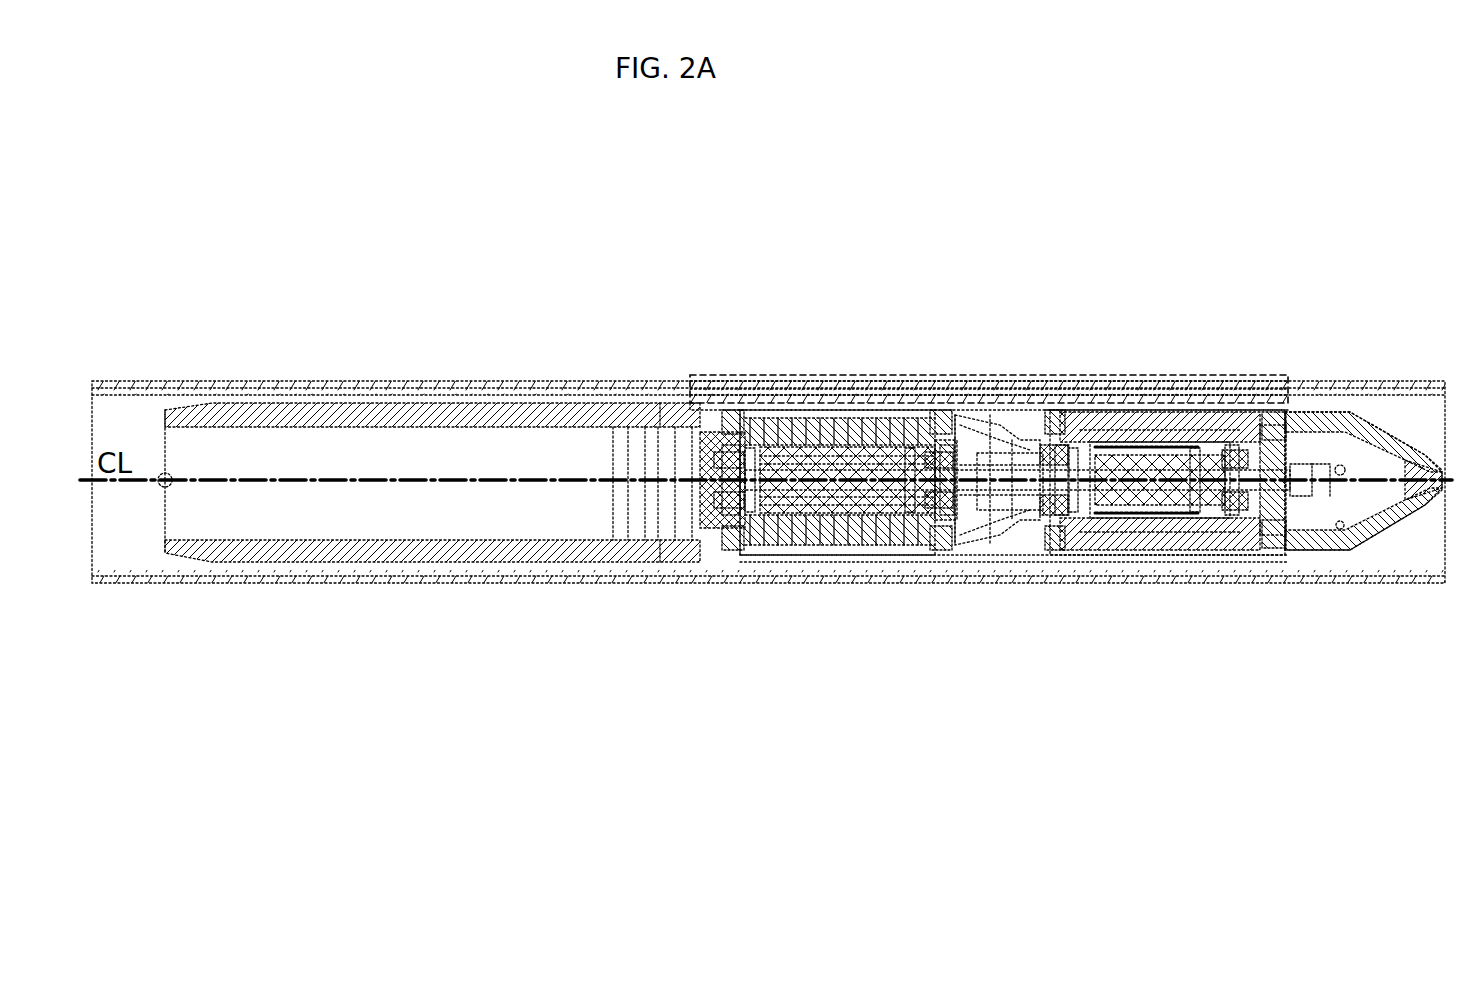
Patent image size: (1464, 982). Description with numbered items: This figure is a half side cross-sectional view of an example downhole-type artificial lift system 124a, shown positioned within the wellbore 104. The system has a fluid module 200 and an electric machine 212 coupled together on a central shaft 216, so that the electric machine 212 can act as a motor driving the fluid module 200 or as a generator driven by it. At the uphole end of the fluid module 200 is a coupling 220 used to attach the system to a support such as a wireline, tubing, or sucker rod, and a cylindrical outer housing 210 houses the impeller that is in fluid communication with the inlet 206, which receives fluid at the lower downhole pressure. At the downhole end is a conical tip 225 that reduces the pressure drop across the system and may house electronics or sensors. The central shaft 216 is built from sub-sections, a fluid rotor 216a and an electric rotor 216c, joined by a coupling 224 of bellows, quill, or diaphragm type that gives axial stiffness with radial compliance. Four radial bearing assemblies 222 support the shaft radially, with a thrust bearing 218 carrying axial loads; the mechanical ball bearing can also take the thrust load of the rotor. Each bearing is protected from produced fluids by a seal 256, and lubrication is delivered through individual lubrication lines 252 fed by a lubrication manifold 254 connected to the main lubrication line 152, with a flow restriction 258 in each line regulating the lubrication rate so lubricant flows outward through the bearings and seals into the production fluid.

The wellbore 104 is at (1412, 407).
The downhole-type artificial lift system 124a is at (596, 248).
The main lubrication line 152 is at (165, 388).
The fluid module 200 is at (840, 626).
The inlet 206 is at (1000, 572).
The outer housing 210 is at (750, 403).
The electric machine 212 is at (1138, 626).
The central shaft 216 is at (748, 488).
The fluid rotor 216a is at (793, 477).
The electric rotor 216c is at (1140, 440).
The thrust bearing 218 is at (1278, 515).
The coupling 220 is at (163, 540).
The radial bearing assembly 222 is at (726, 492).
The coupling 224 is at (1005, 490).
The conical tip 225 is at (1404, 513).
The lubrication line 252 is at (727, 427).
The lubrication manifold 254 is at (714, 458).
The seal 256 is at (746, 506).
The flow restriction 258 is at (690, 393).